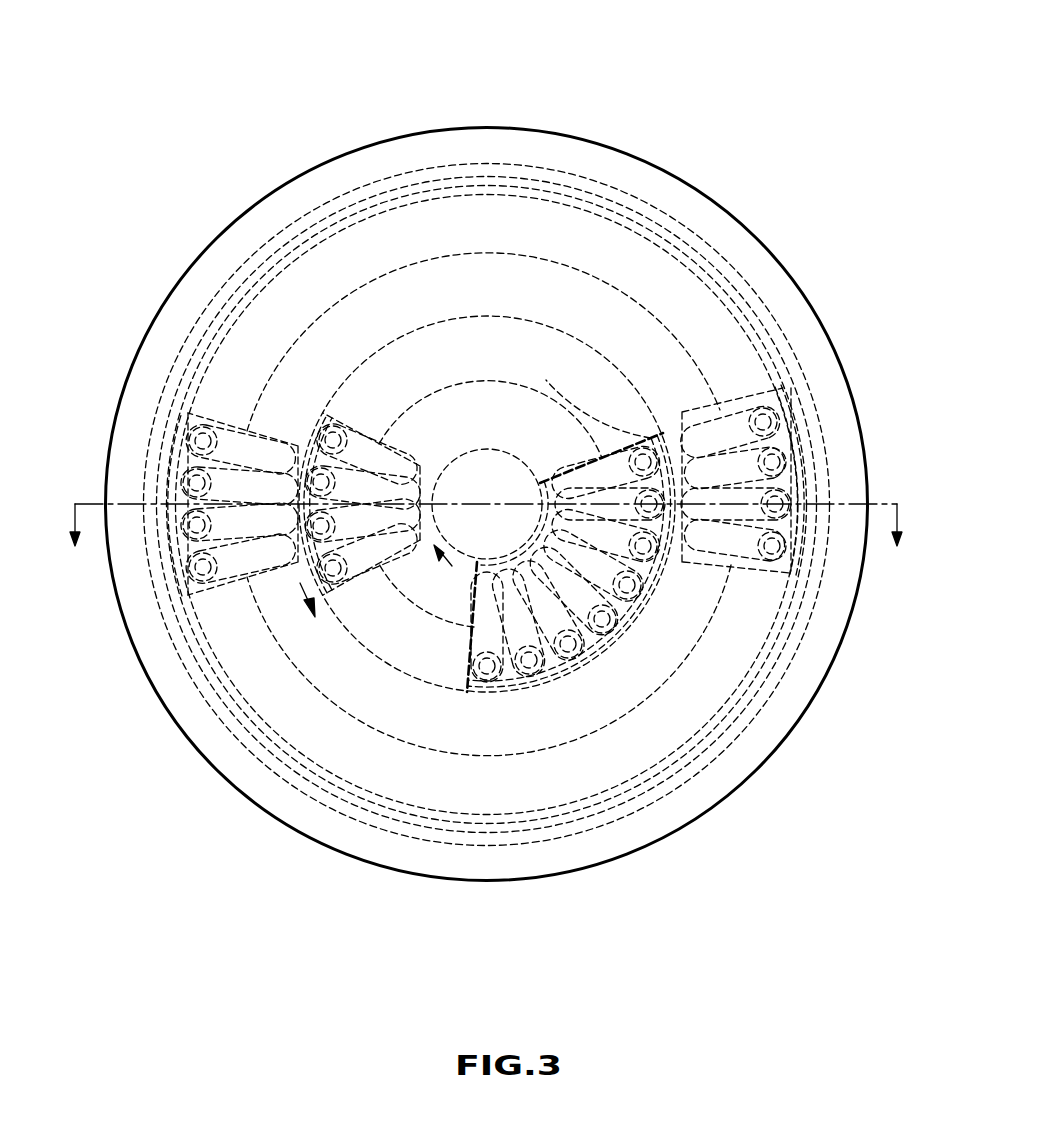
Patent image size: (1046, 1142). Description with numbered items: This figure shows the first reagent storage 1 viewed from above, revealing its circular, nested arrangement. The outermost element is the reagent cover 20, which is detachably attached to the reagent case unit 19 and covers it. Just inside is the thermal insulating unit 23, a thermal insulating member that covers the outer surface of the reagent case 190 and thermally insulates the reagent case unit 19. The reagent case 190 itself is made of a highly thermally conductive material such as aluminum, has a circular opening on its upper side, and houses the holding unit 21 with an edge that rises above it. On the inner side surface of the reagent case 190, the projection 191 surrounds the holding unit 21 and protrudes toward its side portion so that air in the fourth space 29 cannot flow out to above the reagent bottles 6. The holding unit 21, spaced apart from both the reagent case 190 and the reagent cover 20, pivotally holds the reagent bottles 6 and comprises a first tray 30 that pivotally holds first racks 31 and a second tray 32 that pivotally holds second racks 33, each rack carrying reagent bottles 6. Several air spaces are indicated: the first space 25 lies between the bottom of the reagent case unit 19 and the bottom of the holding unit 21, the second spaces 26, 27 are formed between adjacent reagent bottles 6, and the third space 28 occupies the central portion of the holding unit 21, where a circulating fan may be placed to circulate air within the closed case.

The first reagent storage 1 is at (478, 80).
The reagent cover 20 is at (549, 129).
The thermal insulating unit 23 is at (614, 170).
The reagent case unit 19 is at (498, 490).
The reagent case 190 is at (690, 218).
The projection 191 is at (694, 242).
The first tray 30 is at (645, 390).
The first rack 31 is at (345, 422).
The second tray 32 is at (487, 530).
The second rack 33 is at (803, 452).
The holding unit 21 is at (908, 308).
The reagent bottle 6 is at (272, 455).
The first space 25 is at (202, 672).
The second space 26 is at (250, 583).
The second space 27 is at (175, 560).
The fourth space 29 is at (228, 665).
The third space 28 is at (470, 543).